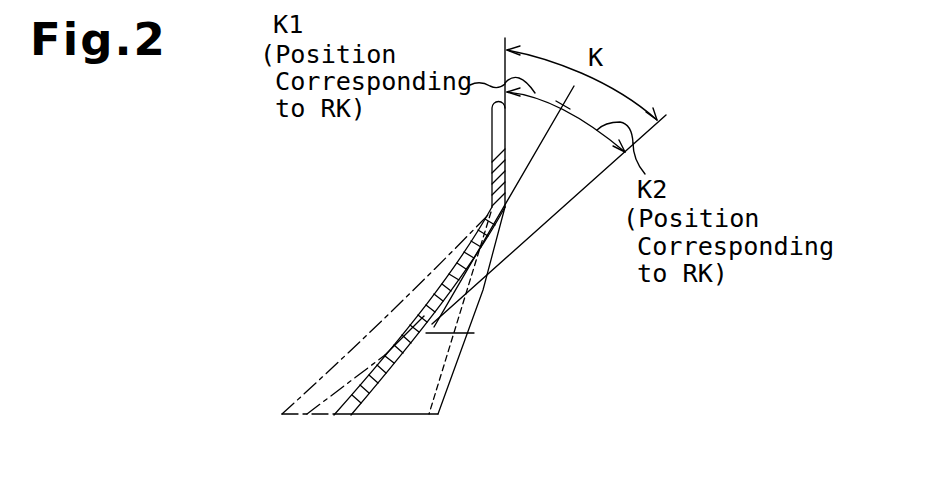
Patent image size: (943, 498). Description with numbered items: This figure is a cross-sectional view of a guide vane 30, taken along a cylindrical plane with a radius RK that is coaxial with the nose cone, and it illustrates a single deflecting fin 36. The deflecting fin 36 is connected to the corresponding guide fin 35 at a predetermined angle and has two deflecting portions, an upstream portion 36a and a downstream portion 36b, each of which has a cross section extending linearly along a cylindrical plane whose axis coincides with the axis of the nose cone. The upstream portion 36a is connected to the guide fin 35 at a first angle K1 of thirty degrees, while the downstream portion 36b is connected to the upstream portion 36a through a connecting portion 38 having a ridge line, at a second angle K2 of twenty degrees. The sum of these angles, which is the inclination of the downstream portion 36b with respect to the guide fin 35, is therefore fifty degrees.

The guide vane 30 is at (422, 319).
The guide fin 35 is at (492, 168).
The deflecting fin 36 is at (416, 350).
The upstream portion 36a is at (456, 304).
The downstream portion 36b is at (383, 390).
The connecting portion 38 is at (506, 211).